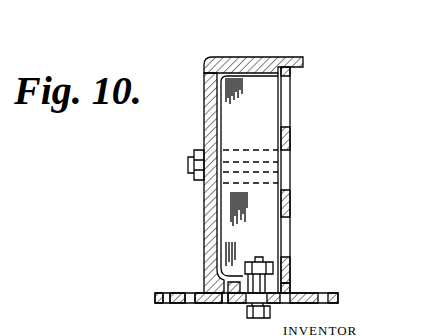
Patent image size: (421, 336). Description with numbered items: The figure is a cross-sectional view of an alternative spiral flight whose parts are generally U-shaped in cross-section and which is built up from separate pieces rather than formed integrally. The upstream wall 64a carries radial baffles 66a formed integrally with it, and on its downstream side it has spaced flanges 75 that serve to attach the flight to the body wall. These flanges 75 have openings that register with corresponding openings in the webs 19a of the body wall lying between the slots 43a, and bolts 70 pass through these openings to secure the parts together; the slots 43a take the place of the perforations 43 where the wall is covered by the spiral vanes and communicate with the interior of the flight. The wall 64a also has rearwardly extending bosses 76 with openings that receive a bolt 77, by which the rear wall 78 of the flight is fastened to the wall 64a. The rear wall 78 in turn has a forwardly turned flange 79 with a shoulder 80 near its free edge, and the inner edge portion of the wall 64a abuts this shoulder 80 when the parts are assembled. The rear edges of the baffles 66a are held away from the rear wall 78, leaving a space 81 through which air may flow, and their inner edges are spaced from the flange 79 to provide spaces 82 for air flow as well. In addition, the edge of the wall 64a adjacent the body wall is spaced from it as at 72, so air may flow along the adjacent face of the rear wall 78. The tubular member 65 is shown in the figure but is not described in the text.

The forwardly turned flange 79 is at (245, 60).
The rear wall 78 is at (205, 223).
The space 81 is at (218, 115).
The spaces 82 is at (230, 73).
The rearwardly extending bosses 76 is at (290, 187).
The tube 65 is at (287, 115).
The shoulder 80 is at (276, 63).
The upstream wall 64a is at (288, 140).
The radial baffles 66a is at (257, 103).
The bolts 70 is at (290, 256).
The space 72 is at (291, 292).
The bolt 77 is at (217, 168).
The webs 19a is at (233, 300).
The perforations 43 is at (193, 293).
The slots 43a is at (256, 303).
The spaced flanges 75 is at (247, 276).